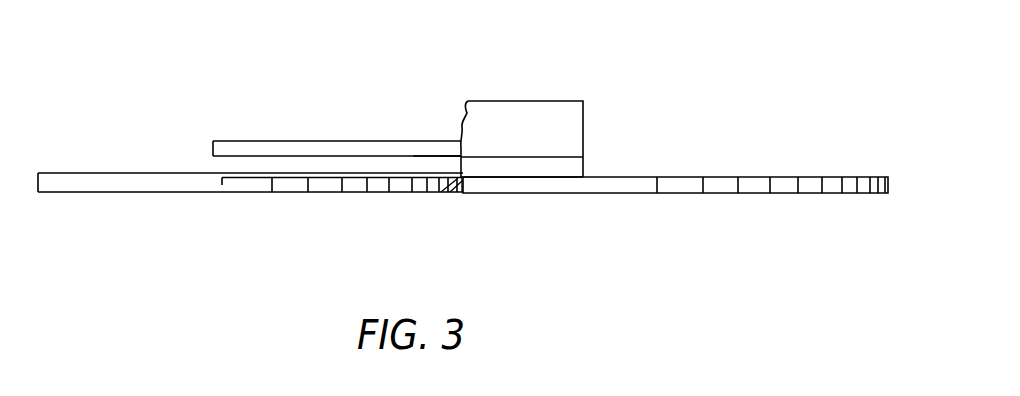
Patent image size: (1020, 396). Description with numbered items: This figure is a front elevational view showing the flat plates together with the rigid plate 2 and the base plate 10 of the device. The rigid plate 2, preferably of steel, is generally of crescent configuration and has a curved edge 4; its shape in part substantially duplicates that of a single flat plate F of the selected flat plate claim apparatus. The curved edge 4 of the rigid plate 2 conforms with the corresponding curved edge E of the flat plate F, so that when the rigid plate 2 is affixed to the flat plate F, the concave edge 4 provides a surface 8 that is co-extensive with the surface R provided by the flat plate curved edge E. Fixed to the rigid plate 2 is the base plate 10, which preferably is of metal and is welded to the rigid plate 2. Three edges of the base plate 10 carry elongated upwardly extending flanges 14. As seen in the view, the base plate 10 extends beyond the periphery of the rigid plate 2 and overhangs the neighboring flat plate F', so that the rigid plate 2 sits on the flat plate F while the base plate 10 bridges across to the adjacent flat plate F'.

The rigid plate 2 is at (573, 167).
The curved edge 4 is at (462, 170).
The surface 8 is at (462, 172).
The base plate 10 is at (270, 141).
The flanges 14 is at (573, 152).
The surface R is at (455, 177).
The curved edge E is at (448, 192).
The flat plate F is at (675, 222).
The neighboring flat plate F' is at (249, 213).